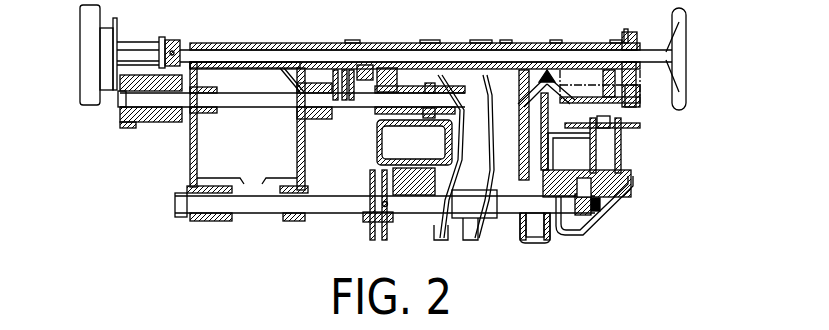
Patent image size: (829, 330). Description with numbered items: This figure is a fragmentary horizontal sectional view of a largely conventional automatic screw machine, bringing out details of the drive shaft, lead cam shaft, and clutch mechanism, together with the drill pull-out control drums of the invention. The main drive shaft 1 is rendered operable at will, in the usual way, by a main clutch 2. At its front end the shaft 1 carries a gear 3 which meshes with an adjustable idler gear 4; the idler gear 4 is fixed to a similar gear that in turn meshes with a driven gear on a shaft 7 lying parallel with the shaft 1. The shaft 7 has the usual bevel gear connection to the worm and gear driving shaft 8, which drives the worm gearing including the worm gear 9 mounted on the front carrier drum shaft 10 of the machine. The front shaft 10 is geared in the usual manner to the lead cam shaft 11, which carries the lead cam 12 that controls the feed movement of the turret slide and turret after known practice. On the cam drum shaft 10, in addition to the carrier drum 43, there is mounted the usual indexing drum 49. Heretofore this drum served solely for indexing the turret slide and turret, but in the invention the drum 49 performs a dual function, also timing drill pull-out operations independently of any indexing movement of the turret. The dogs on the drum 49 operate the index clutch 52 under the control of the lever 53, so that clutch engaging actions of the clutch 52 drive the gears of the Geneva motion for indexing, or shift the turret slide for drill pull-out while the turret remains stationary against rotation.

The main drive shaft 1 is at (322, 52).
The main clutch 2 is at (180, 42).
The gear 3 is at (638, 40).
The adjustable idler gear 4 is at (640, 103).
The shaft 7 is at (572, 83).
The worm and gear driving shaft 8 is at (527, 129).
The worm gear 9 is at (535, 236).
The front carrier drum shaft 10 is at (566, 208).
The lead cam shaft 11 is at (625, 167).
The lead cam 12 is at (630, 128).
The carrier drum 43 is at (436, 222).
The indexing drum 49 is at (487, 240).
The index clutch 52 is at (476, 40).
The lever 53 is at (489, 103).